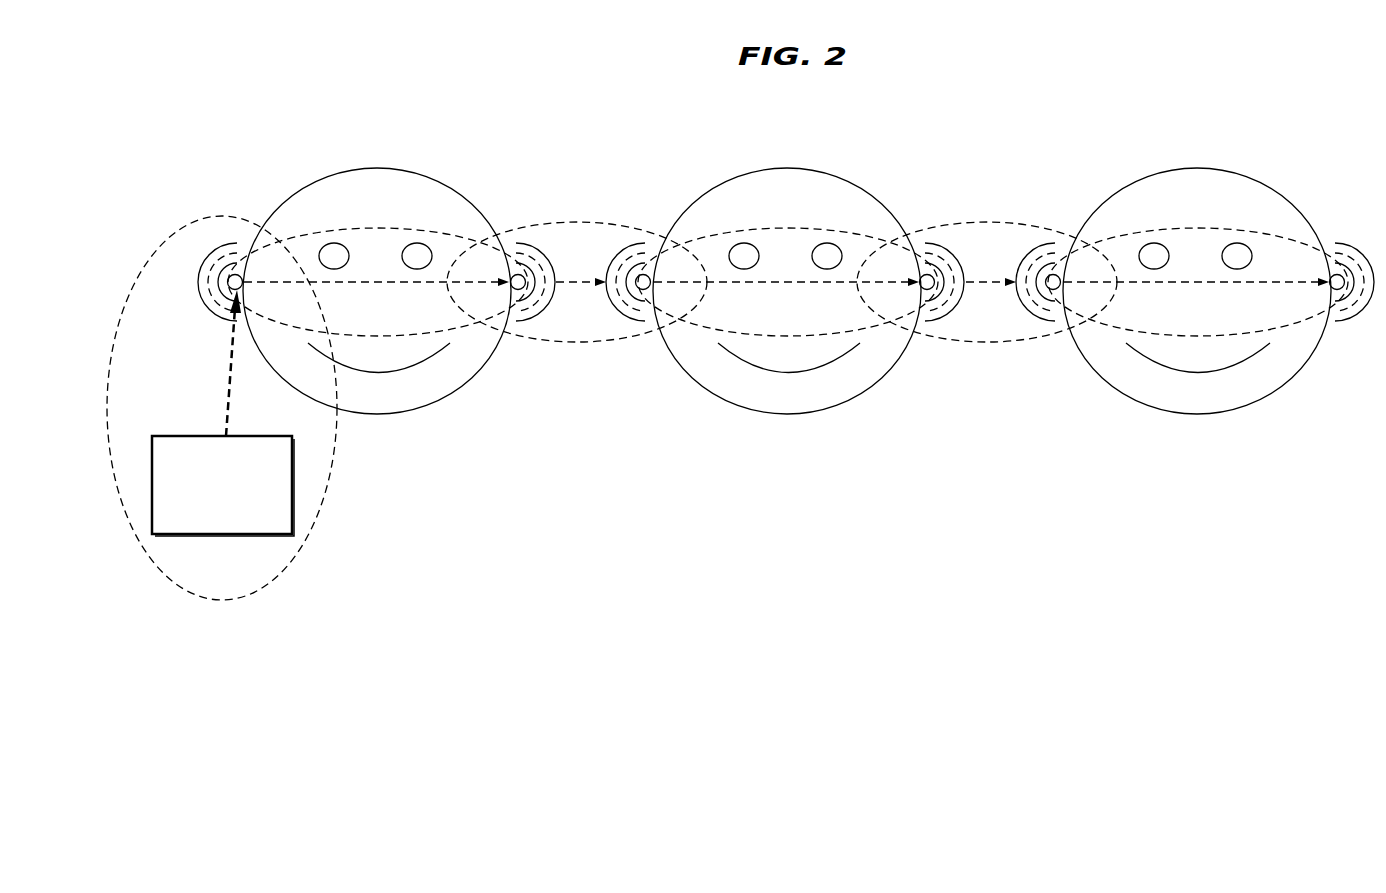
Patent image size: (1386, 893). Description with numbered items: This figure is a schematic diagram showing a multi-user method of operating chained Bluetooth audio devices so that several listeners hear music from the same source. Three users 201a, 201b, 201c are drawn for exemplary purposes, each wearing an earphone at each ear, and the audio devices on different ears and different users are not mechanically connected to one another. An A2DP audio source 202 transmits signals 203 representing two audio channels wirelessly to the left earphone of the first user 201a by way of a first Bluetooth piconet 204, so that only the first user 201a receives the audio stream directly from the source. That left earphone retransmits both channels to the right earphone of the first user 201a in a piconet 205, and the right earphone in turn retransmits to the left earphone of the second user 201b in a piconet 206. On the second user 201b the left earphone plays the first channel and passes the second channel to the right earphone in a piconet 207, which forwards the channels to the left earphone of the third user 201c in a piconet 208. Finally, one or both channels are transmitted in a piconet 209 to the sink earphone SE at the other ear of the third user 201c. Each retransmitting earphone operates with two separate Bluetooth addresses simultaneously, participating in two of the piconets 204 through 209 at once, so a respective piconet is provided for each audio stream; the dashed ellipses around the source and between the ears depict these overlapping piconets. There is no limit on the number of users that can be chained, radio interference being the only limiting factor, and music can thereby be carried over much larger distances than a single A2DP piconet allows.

The first user 201a is at (428, 403).
The second user 201b is at (837, 405).
The third user head 201c is at (1247, 405).
The A2DP audio source 202 is at (192, 436).
The signals 203 is at (228, 363).
The Bluetooth piconet 204 is at (323, 500).
The Bluetooth piconet 205 is at (363, 230).
The Bluetooth piconet 206 is at (580, 223).
The Bluetooth piconet 207 is at (775, 228).
The Bluetooth piconet 208 is at (990, 223).
The Bluetooth piconet 209 is at (1183, 230).
The sink earphone SE is at (1342, 255).